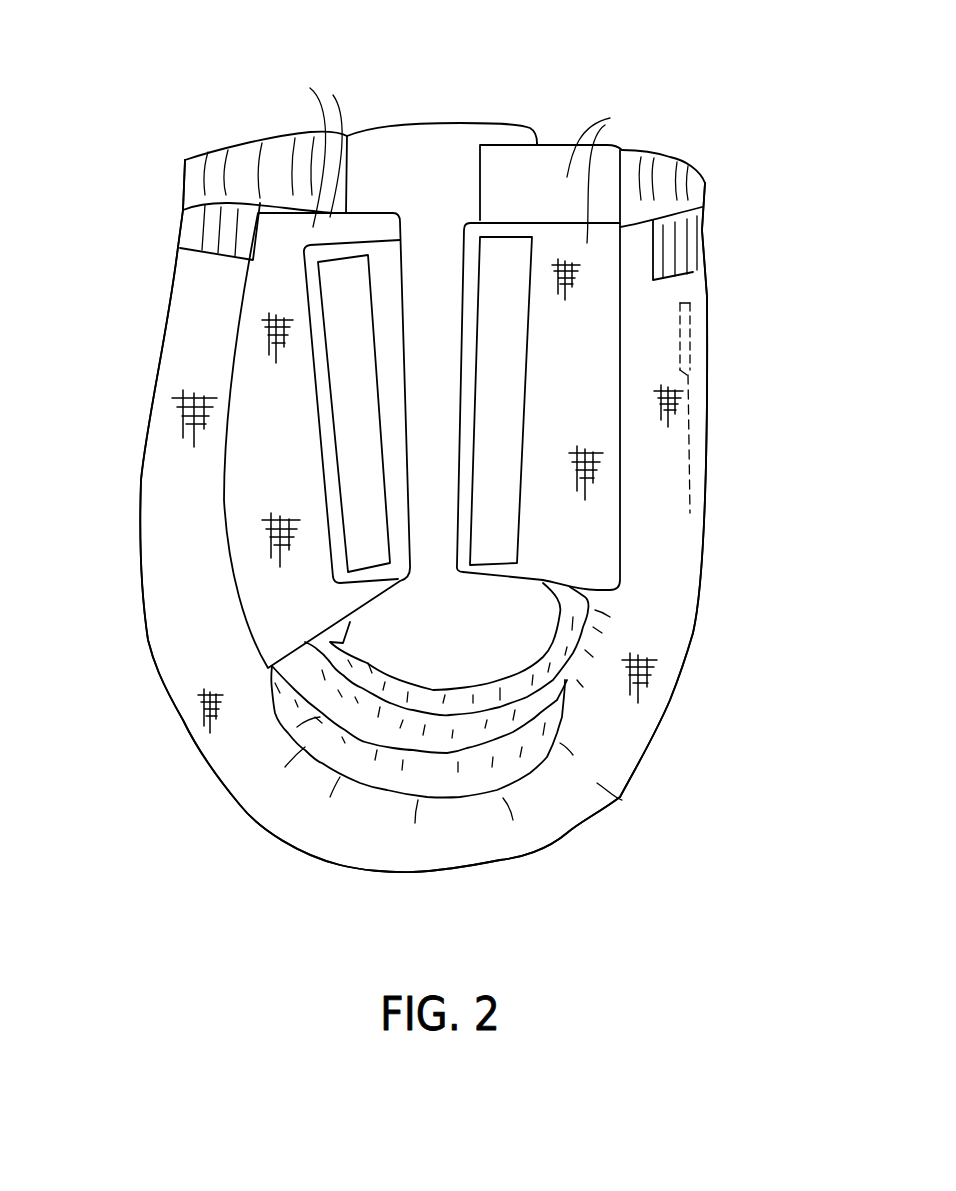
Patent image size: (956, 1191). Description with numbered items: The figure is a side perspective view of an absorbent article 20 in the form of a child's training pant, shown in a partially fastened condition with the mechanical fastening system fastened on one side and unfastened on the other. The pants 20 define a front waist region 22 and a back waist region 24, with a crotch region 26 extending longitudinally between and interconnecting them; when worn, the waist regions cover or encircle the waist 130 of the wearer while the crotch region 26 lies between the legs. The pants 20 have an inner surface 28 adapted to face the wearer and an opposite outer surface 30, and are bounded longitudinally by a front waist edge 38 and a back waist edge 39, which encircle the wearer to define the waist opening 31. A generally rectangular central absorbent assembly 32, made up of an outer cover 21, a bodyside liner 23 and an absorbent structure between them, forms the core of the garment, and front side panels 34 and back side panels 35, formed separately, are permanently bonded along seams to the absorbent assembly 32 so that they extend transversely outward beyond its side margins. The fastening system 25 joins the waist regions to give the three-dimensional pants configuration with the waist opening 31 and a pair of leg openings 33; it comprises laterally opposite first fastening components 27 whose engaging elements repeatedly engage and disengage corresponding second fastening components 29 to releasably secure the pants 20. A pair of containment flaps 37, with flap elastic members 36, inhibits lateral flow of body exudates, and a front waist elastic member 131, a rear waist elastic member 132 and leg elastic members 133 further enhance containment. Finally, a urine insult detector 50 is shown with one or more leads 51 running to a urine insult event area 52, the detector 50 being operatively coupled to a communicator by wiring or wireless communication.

The absorbent article 20 is at (200, 143).
The outer cover 21 is at (620, 797).
The front waist region 22 is at (657, 578).
The bodyside liner 23 is at (668, 160).
The back waist region 24 is at (163, 523).
The fastening system 25 is at (358, 531).
The crotch region 26 is at (290, 828).
The first fastening components 27 is at (343, 390).
The inner surface 28 is at (450, 211).
The second fastening components 29 is at (507, 247).
The outer surface 30 is at (617, 732).
The waist opening 31 is at (403, 125).
The absorbent assembly 32 is at (197, 665).
The leg openings 33 is at (360, 630).
The front side panels 34 is at (564, 169).
The back side panels 35 is at (310, 149).
The flap elastic members 36 is at (460, 797).
The containment flaps 37 is at (318, 715).
The front waist edge 38 is at (693, 163).
The back waist edge 39 is at (187, 170).
The urine insult detector 50 is at (690, 332).
The leads 51 is at (695, 442).
The urine insult event area 52 is at (765, 503).
The waist 130 is at (518, 105).
The front waist elastic member 131 is at (695, 237).
The rear waist elastic member 132 is at (190, 223).
The leg elastic members 133 is at (520, 673).